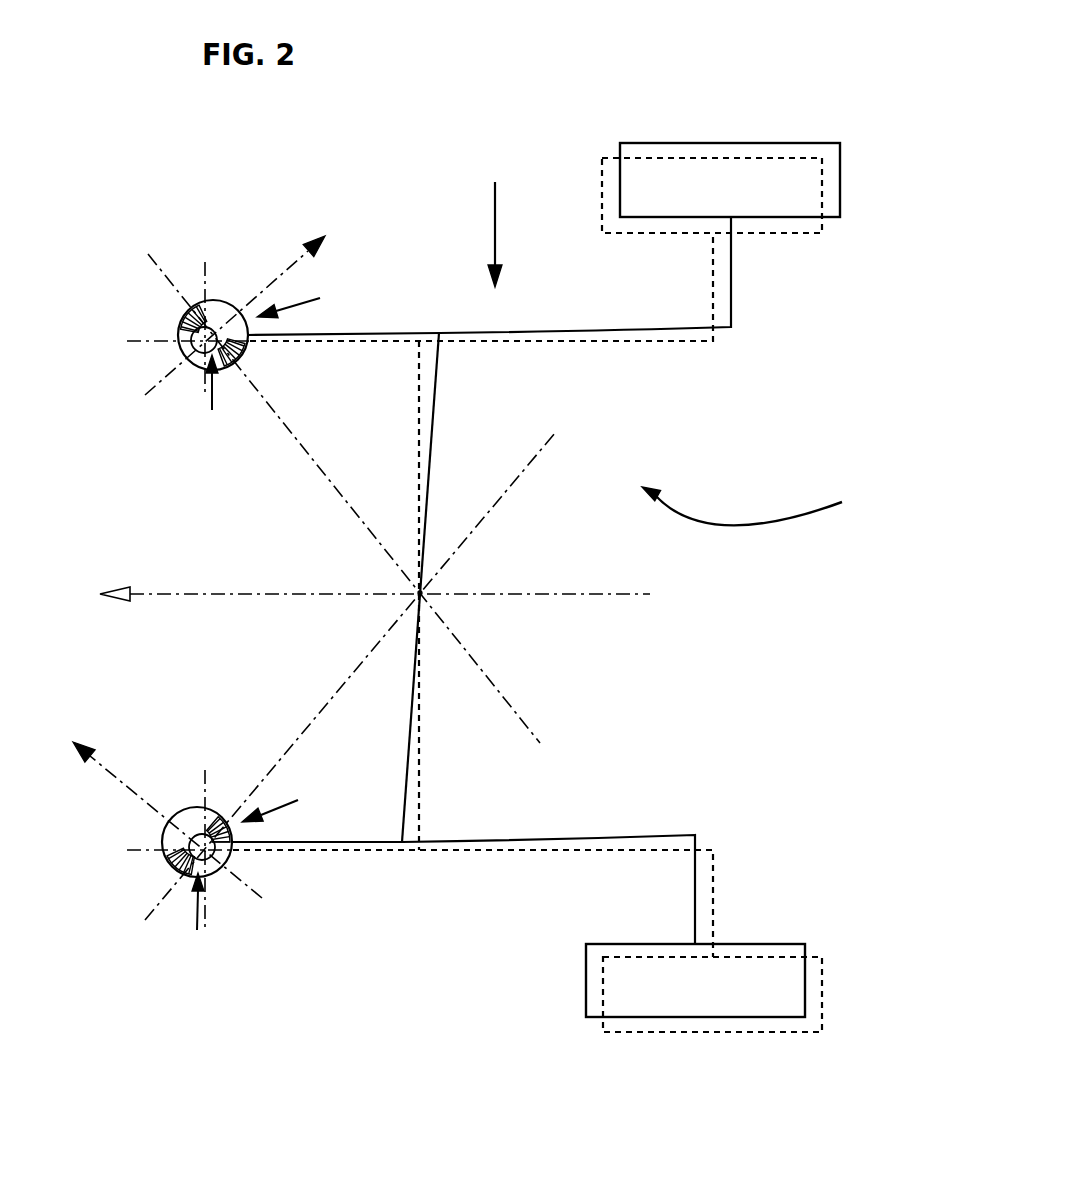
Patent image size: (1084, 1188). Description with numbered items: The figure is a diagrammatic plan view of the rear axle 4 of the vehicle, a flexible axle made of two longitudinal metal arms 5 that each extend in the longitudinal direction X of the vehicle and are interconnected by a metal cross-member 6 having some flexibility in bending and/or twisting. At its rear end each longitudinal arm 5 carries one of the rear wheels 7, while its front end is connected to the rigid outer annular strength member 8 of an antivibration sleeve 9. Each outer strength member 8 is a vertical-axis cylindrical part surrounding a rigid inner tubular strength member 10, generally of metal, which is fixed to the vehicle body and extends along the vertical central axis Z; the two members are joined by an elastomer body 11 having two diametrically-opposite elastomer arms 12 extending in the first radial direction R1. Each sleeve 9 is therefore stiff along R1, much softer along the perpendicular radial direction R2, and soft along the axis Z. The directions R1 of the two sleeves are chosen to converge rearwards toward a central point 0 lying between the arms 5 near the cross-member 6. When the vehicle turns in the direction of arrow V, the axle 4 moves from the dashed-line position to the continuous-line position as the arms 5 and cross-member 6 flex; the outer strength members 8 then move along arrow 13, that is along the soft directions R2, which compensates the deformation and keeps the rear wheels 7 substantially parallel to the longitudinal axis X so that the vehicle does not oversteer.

The central point 0 is at (420, 593).
The rear axle 4 is at (494, 218).
The longitudinal metal arm 5 is at (637, 331).
The metal cross-member 6 is at (435, 405).
The rear wheel 7 is at (785, 143).
The outer annular strength member 8 is at (223, 300).
The antivibration sleeve 9 is at (294, 550).
The inner tubular strength member 10 is at (250, 340).
The elastomer body 11 is at (204, 661).
The elastomer arm 12 is at (192, 327).
The arrow 13 is at (280, 273).
The longitudinal direction X is at (168, 592).
The vertical central axis Z is at (198, 323).
The arrow V is at (805, 512).
The first radial direction R1 is at (157, 282).
The second radial direction R2 is at (157, 385).